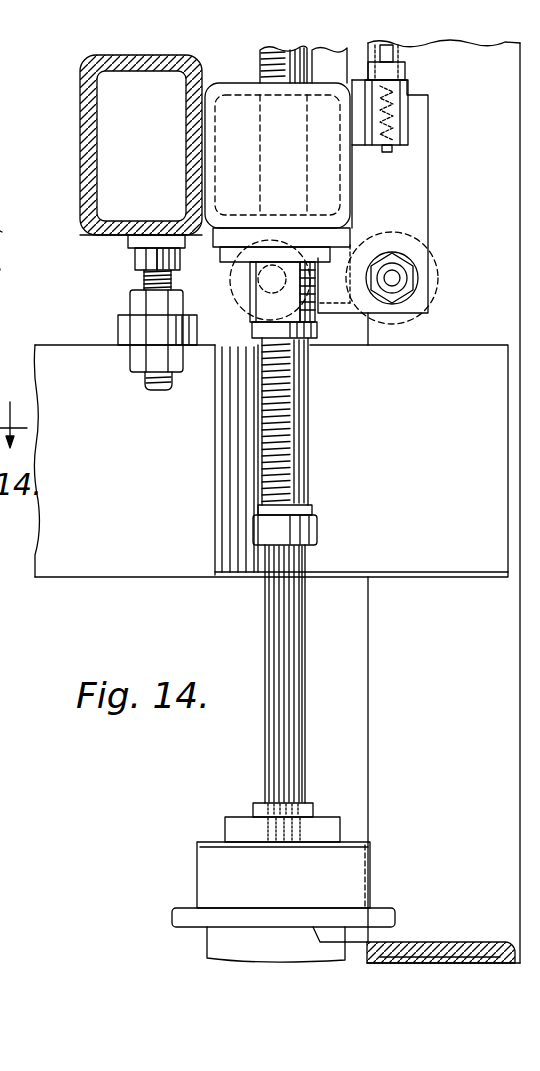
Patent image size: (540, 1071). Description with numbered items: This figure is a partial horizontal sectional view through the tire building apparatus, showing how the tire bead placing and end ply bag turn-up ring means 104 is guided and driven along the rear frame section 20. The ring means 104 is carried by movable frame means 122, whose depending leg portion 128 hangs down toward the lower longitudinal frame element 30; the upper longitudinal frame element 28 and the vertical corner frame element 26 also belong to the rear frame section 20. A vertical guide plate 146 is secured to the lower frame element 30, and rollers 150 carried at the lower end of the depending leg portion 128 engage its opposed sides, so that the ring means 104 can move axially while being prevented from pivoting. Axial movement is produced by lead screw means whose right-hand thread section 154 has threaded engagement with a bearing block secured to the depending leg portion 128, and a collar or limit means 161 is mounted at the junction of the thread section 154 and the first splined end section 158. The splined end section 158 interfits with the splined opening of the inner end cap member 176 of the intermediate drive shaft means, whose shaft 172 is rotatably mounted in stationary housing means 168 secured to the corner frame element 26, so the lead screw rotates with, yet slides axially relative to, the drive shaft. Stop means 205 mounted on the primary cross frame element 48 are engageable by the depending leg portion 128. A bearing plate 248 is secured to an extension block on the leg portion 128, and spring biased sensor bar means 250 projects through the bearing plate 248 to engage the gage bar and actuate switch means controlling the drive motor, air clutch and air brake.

The rear frame section 20 is at (12, 218).
The vertical corner frame element 26 is at (440, 942).
The upper longitudinal frame element 28 is at (0, 266).
The lower longitudinal frame element 30 is at (376, 684).
The primary cross frame element 48 is at (169, 578).
The tire bead placing and end ply bag turn-up ring means 104 is at (72, 61).
The movable frame means 122 is at (219, 74).
The depending leg portion 128 is at (82, 127).
The vertical guide plate 146 is at (405, 318).
The rollers 150 is at (230, 290).
The right-hand thread section 154 is at (309, 420).
The first splined end section 158 is at (297, 743).
The collar or limit means 161 is at (319, 529).
The stationary housing means 168 is at (182, 904).
The shaft 172 is at (343, 820).
The inner end cap member 176 is at (314, 804).
The stop means 205 is at (128, 274).
The bearing plate 248 is at (408, 70).
The spring biased sensor bar means 250 is at (395, 153).